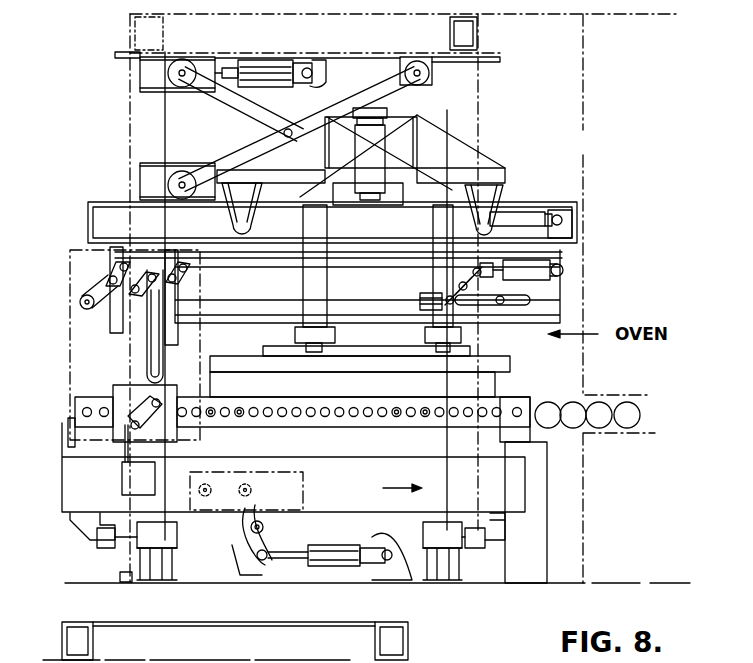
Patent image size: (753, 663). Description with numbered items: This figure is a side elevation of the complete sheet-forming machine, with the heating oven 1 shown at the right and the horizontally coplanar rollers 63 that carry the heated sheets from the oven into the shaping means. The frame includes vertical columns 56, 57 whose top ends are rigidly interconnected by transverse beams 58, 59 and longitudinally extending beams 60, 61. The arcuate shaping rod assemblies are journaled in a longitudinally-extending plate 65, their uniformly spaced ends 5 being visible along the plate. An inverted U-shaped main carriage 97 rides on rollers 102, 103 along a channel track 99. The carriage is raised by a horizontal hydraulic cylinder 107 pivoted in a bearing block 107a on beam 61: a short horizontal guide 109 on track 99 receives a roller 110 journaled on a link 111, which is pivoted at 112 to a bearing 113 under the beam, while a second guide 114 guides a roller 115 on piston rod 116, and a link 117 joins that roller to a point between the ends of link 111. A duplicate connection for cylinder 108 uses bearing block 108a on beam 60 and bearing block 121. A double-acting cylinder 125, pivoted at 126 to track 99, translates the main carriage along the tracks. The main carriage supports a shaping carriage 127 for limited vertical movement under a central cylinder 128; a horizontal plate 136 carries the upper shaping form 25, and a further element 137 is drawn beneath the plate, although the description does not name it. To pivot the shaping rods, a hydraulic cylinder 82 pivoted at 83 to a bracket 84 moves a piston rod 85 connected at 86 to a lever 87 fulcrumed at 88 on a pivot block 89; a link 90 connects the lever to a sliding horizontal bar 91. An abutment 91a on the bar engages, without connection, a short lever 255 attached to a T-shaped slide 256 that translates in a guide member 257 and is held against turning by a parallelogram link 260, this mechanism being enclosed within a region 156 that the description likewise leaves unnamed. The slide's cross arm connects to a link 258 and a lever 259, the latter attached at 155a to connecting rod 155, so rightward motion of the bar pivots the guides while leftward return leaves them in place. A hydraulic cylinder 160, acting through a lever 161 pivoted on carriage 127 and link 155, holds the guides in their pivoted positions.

The oven 1 is at (632, 223).
The ends of rod assemblies 5 is at (211, 417).
The upper shaping form 25 is at (287, 372).
The vertical column 56 is at (468, 112).
The vertical column 57 is at (145, 125).
The transverse beam 58 is at (40, 645).
The transverse beam 59 is at (133, 30).
The longitudinally extending beam 60 is at (162, 633).
The longitudinally extending beam 61 is at (365, 40).
The rollers 63 is at (627, 430).
The longitudinally-extending plate 65 is at (313, 422).
The hydraulic cylinder 82 is at (356, 568).
The pivot 83 is at (382, 547).
The bracket 84 is at (392, 572).
The piston rod 85 is at (296, 542).
The pivotal connection 86 is at (260, 568).
The lever 87 is at (249, 574).
The fulcrum 88 is at (258, 498).
The pivot block 89 is at (283, 535).
The link 90 is at (216, 500).
The horizontal bar 91 is at (62, 470).
The abutment 91a is at (120, 458).
The main carriage 97 is at (487, 160).
The channel track 99 is at (88, 220).
The roller 102 is at (484, 225).
The roller 103 is at (233, 228).
The hydraulic cylinder 107 is at (247, 65).
The bearing block 107a is at (306, 62).
The hydraulic cylinder 108 is at (287, 662).
The bearing block 108a is at (230, 650).
The short horizontal guide 109 is at (140, 178).
The roller 110 is at (184, 170).
The link 111 is at (245, 146).
The pivot 112 is at (420, 60).
The bearing 113 is at (437, 75).
The short horizontal guide 114 is at (150, 68).
The roller 115 is at (186, 59).
The piston rod 116 is at (228, 68).
The link 117 is at (215, 97).
The bearing block 121 is at (125, 660).
The hydraulic cylinder 125 is at (515, 220).
The pivot 126 is at (568, 236).
The shaping carriage 127 is at (303, 215).
The hydraulic cylinder 128 is at (350, 148).
The horizontal plate 136 is at (350, 350).
The plate 137 is at (502, 368).
The link or connecting rod 155 is at (250, 305).
The attachment point 155a is at (80, 304).
The housing 156 is at (78, 357).
The hydraulic cylinder 160 is at (535, 280).
The lever 161 is at (455, 290).
The short lever 255 is at (172, 402).
The T-shaped slide 256 is at (147, 360).
The guide member 257 is at (180, 318).
The link 258 is at (190, 268).
The lever 259 is at (95, 292).
The parallelogram link 260 is at (140, 305).